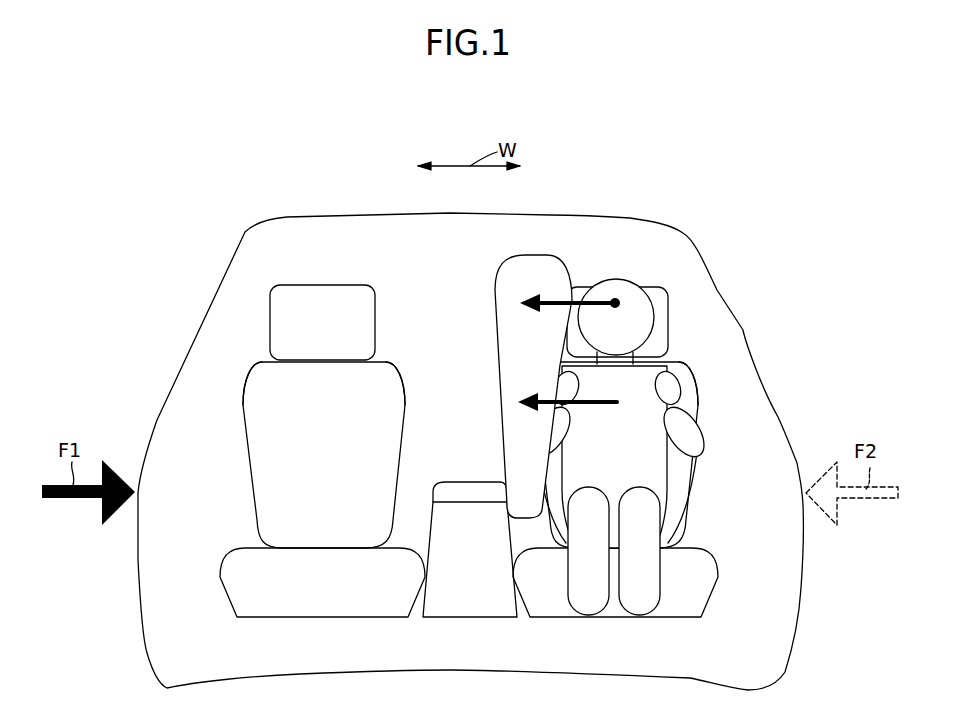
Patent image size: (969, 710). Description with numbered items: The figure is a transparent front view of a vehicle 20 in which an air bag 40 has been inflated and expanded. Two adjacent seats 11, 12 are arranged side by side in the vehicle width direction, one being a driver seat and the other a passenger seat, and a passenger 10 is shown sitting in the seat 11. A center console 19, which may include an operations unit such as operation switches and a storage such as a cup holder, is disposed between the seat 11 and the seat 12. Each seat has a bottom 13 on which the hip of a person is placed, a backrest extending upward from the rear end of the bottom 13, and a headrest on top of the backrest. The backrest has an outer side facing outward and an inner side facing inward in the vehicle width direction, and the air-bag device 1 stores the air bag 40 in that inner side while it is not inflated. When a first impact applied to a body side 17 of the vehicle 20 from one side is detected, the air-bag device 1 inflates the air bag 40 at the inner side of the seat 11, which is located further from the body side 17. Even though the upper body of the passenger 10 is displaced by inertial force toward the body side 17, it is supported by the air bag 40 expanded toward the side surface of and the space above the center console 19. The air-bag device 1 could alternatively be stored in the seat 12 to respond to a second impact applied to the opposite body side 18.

The air-bag device 1 is at (482, 287).
The passenger 10 is at (655, 470).
The seat 11 is at (610, 404).
The seat 12 is at (451, 467).
The bottom 13 is at (380, 612).
The body side 17 is at (190, 328).
The body side 18 is at (745, 334).
The center console 19 is at (475, 612).
The vehicle 20 is at (623, 215).
The air bag 40 is at (537, 253).